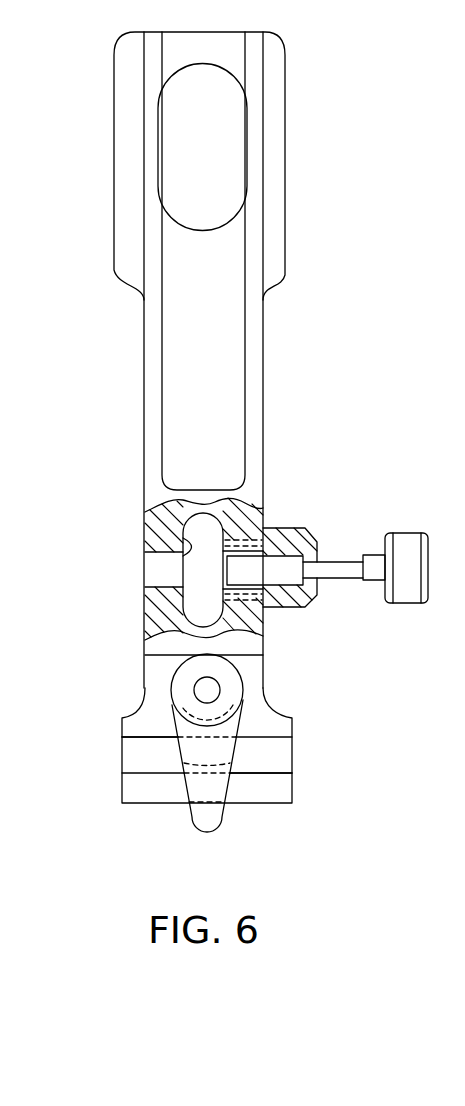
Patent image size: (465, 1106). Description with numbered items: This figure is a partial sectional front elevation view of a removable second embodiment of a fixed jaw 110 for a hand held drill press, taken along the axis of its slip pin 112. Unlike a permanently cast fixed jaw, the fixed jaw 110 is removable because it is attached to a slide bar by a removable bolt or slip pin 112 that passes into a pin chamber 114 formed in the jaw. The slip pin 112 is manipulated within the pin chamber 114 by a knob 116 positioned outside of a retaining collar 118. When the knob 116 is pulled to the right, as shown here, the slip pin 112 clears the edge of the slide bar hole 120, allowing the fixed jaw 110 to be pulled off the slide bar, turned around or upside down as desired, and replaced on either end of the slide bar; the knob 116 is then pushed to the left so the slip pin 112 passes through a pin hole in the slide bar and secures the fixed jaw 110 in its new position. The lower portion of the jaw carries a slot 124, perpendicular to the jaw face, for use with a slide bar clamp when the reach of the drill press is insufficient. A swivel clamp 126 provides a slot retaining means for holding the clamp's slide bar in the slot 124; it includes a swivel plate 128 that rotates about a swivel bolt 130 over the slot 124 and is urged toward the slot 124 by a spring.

The fixed jaw 110 is at (263, 400).
The slip pin 112 is at (263, 565).
The pin chamber 114 is at (160, 578).
The knob 116 is at (398, 603).
The retaining collar 118 is at (307, 600).
The slide bar hole 120 is at (195, 562).
The slot 124 is at (263, 773).
The swivel clamp 126 is at (210, 818).
The swivel plate 128 is at (182, 753).
The swivel bolt 130 is at (203, 689).